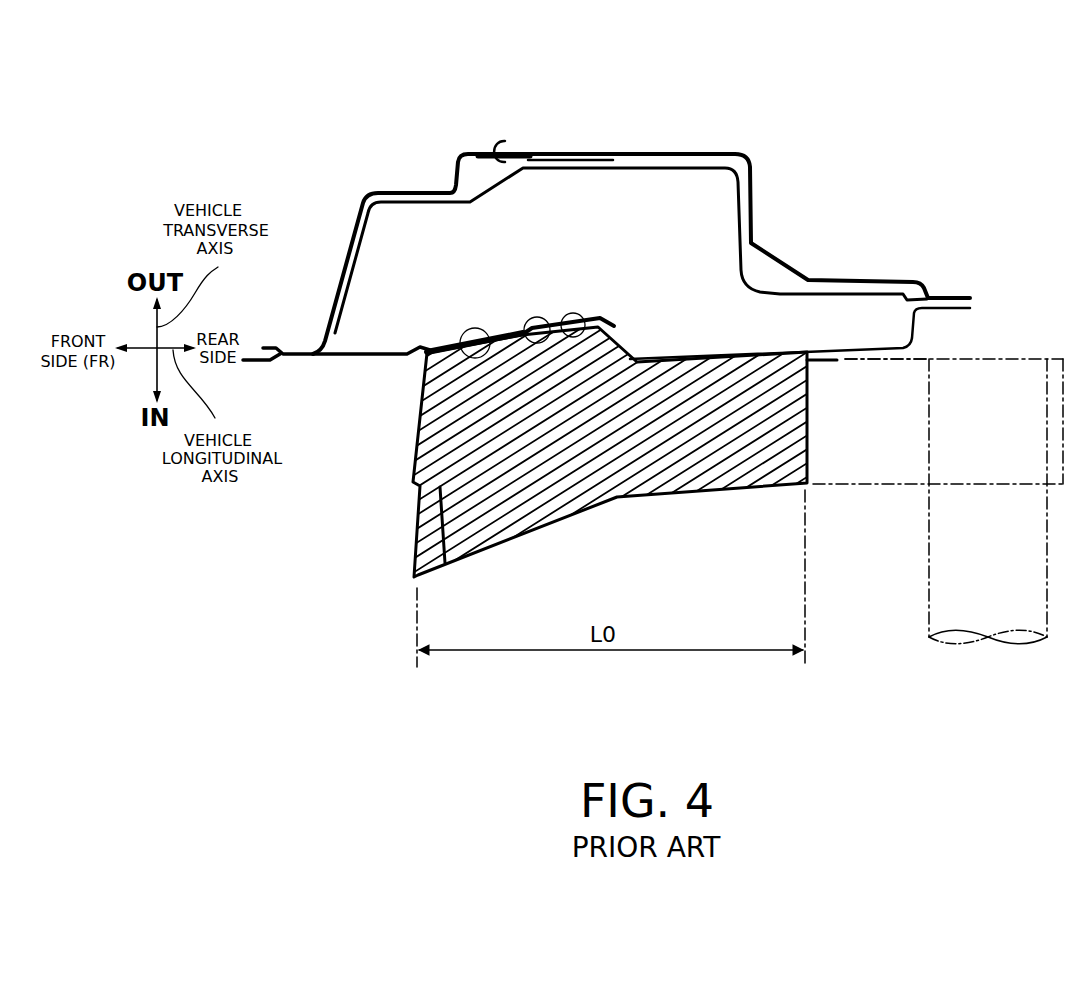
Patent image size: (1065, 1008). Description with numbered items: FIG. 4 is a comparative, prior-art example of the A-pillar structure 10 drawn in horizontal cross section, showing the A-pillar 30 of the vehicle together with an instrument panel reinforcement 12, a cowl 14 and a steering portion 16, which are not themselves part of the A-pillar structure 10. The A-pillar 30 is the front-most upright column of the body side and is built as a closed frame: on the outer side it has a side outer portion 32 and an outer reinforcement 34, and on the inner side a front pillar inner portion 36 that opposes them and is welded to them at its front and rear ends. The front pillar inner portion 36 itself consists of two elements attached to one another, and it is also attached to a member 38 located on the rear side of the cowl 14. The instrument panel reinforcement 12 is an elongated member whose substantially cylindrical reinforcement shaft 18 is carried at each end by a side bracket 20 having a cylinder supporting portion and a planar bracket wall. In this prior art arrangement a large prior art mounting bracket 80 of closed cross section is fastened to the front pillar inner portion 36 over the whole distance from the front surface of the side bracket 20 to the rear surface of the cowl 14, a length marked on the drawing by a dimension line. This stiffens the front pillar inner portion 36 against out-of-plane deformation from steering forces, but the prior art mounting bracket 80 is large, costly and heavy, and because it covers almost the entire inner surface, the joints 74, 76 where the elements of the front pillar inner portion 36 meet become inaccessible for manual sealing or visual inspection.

The A-pillar structure 10 is at (362, 140).
The instrument panel reinforcement 12 is at (816, 702).
The cowl 14 is at (374, 454).
The steering portion 16 is at (988, 605).
The reinforcement shaft 18 is at (930, 559).
The side bracket 20 is at (854, 471).
The A-pillar 30 is at (760, 198).
The side outer portion 32 is at (498, 141).
The outer reinforcement 34 is at (690, 166).
The front pillar inner portion 36 is at (575, 315).
The member 38 is at (414, 556).
The joint 74 is at (467, 328).
The joint 76 is at (530, 318).
The prior art mounting bracket 80 is at (571, 482).